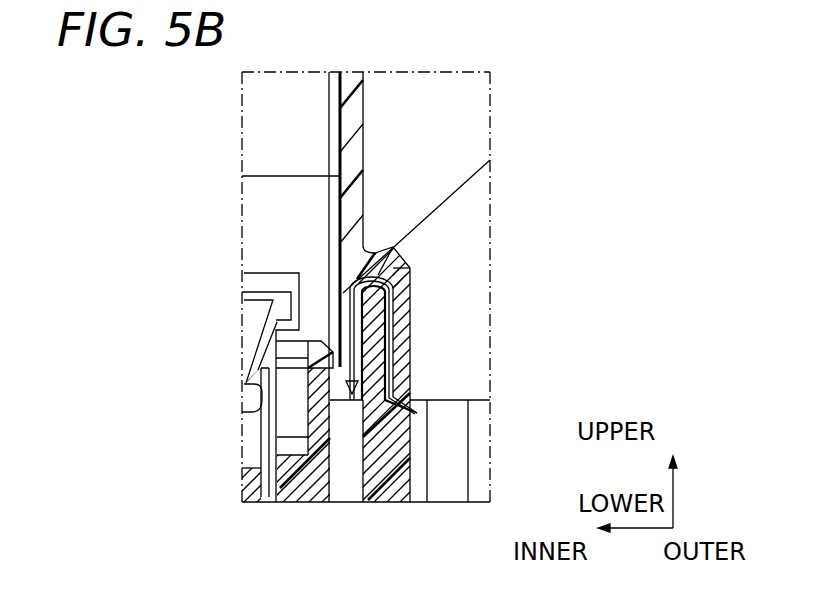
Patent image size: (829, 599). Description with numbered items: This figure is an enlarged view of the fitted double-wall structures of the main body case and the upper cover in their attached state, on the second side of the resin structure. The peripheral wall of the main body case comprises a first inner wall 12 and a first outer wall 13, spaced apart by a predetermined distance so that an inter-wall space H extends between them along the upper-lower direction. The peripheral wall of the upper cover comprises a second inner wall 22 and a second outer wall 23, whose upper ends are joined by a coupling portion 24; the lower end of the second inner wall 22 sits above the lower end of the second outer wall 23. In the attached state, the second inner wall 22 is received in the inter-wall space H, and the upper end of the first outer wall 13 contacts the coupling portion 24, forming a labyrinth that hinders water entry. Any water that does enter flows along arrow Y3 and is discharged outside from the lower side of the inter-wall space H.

The first inner wall 12 is at (323, 452).
The first outer wall 13 is at (385, 428).
The second inner wall 22 is at (347, 295).
The second outer wall 23 is at (400, 272).
The coupling portion 24 is at (393, 252).
The arrow Y3 is at (410, 343).
The inter-wall space H is at (362, 472).